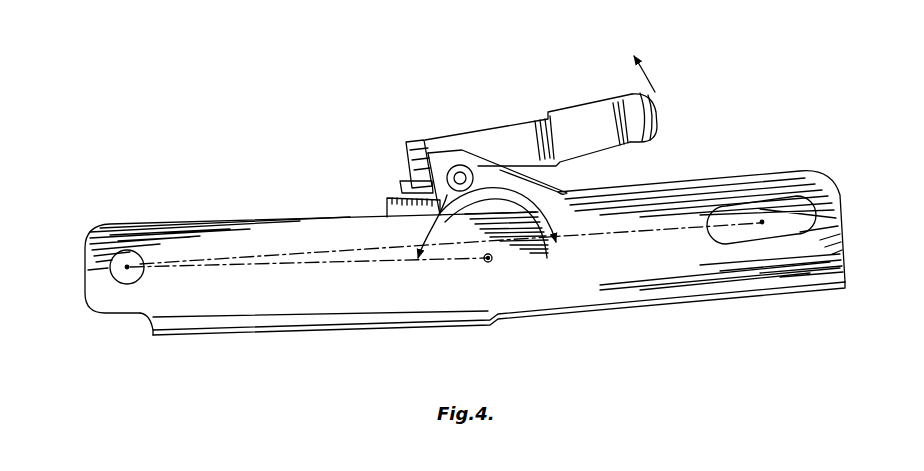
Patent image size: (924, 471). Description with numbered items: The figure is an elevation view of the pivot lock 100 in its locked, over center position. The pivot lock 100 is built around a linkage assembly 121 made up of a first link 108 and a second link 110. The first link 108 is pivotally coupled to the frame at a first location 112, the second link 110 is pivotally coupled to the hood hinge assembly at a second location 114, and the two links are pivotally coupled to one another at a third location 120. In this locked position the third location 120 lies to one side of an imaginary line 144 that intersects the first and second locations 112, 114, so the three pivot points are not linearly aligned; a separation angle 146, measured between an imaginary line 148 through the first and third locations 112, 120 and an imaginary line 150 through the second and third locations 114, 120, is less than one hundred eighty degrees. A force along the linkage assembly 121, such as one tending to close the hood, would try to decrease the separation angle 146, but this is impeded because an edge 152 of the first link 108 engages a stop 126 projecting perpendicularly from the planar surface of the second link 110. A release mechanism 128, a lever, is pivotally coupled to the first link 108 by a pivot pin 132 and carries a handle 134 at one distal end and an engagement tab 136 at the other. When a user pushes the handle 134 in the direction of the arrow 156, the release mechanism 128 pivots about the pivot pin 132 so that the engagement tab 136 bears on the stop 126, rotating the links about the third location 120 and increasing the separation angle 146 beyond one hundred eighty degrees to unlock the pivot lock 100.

The pivot lock 100 is at (805, 108).
The first link 108 is at (822, 170).
The second link 110 is at (236, 222).
The first location 112 is at (762, 222).
The second location 114 is at (126, 268).
The third location 120 is at (487, 263).
The linkage assembly 121 is at (334, 352).
The stop 126 is at (389, 198).
The release mechanism 128 is at (520, 118).
The pivot pin 132 is at (462, 163).
The handle 134 is at (613, 108).
The engagement tab 136 is at (402, 182).
The imaginary line 144 is at (655, 222).
The separation angle 146 is at (562, 192).
The imaginary line 148 is at (625, 240).
The imaginary line 150 is at (278, 263).
The edge 152 is at (430, 178).
The arrow 156 is at (655, 92).